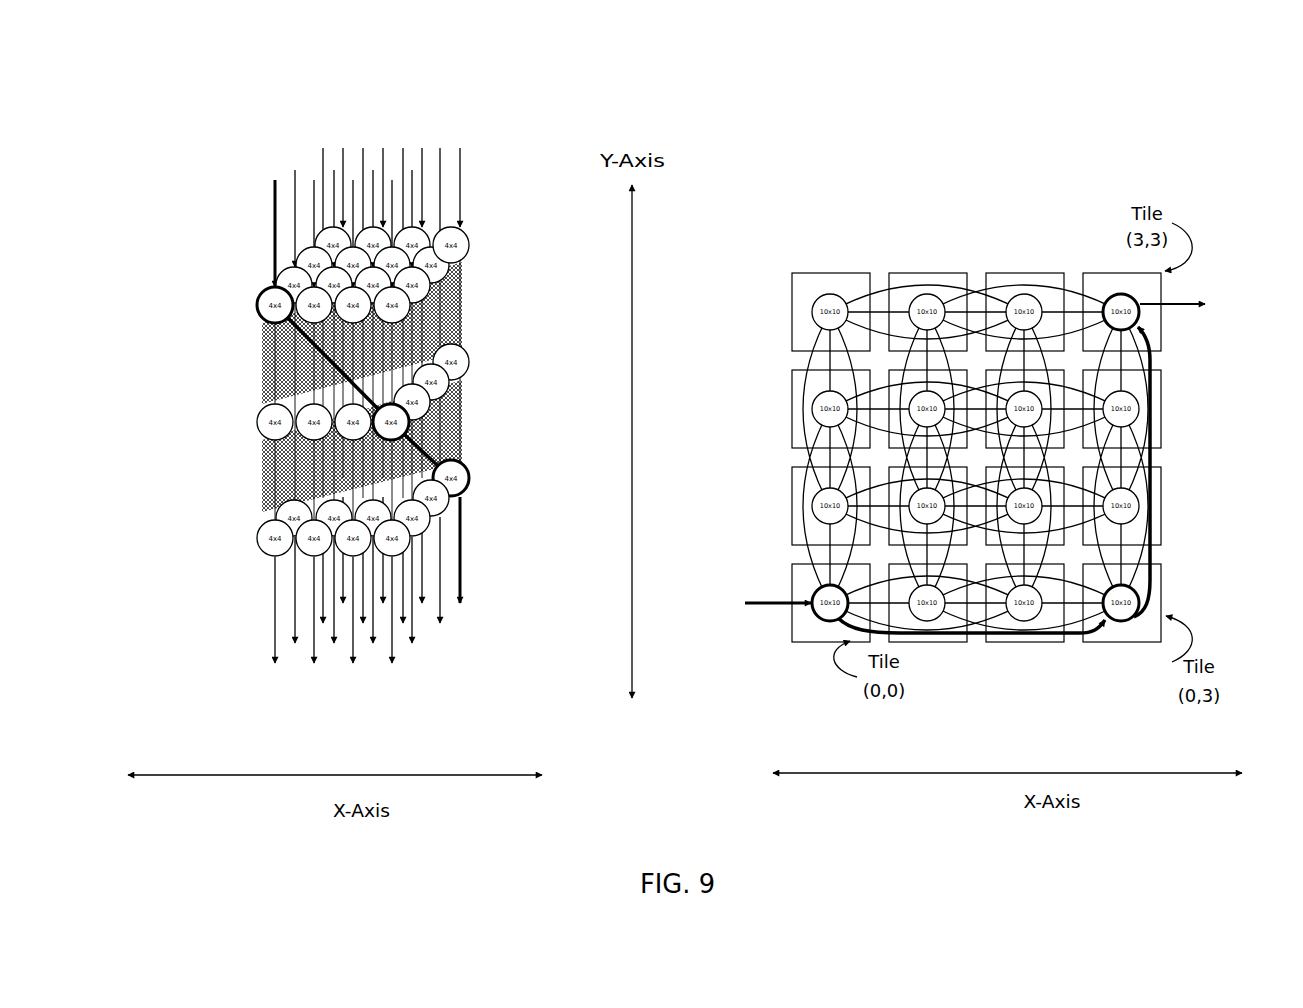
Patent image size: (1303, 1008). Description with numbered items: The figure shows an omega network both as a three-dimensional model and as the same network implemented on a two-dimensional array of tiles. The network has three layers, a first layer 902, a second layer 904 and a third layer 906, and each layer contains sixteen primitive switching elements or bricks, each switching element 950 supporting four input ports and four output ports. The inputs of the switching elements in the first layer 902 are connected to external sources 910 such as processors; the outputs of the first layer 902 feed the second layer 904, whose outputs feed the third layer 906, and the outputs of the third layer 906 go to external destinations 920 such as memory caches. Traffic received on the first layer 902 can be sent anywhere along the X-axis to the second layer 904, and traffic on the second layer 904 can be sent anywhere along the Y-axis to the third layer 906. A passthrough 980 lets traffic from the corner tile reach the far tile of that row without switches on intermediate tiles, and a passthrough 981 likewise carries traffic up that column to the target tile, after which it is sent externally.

The Layer 0 902 is at (238, 232).
The Layer 1 904 is at (250, 468).
The Layer 2 906 is at (250, 503).
The external sources 910 is at (466, 143).
The external destinations 920 is at (465, 658).
The switching element 950 is at (477, 238).
The passthrough 980 is at (968, 636).
The passthrough 981 is at (1157, 458).